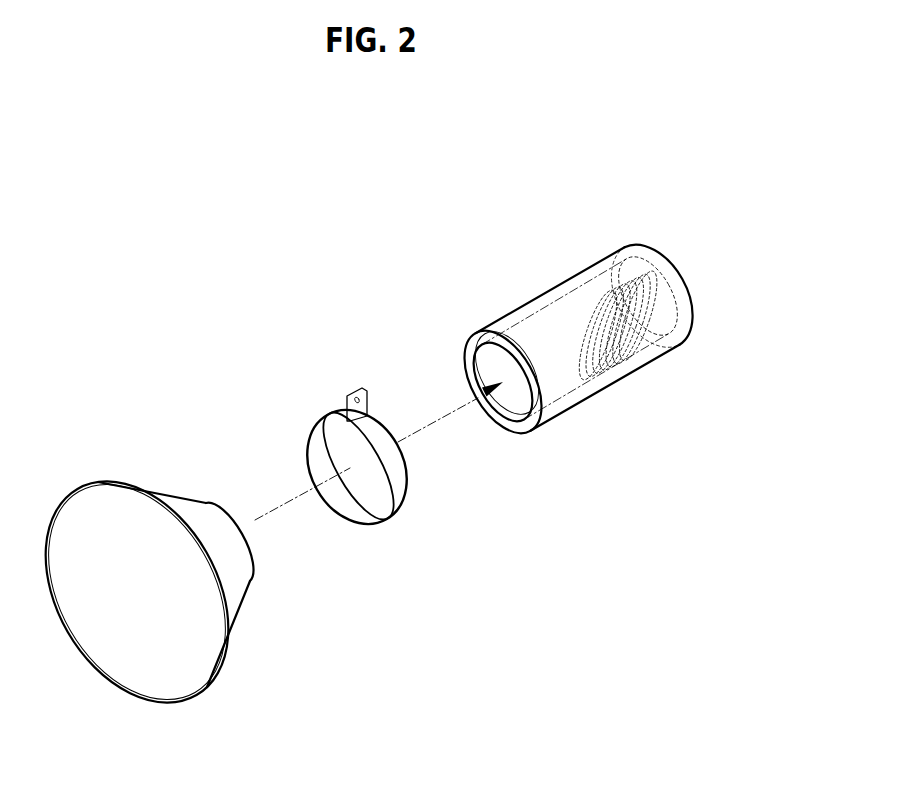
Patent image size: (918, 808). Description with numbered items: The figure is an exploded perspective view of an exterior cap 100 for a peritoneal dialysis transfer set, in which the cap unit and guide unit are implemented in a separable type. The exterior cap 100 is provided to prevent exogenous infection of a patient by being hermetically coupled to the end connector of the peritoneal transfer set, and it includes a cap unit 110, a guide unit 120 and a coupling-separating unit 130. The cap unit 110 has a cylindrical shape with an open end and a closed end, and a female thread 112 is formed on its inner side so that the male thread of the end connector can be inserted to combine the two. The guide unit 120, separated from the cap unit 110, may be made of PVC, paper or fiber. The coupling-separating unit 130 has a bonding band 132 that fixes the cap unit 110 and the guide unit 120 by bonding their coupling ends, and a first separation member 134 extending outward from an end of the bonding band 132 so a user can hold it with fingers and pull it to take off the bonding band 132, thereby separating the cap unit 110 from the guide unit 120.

The exterior cap 100 is at (466, 164).
The cap unit 110 is at (594, 245).
The female thread 112 is at (640, 344).
The guide unit 120 is at (119, 462).
The coupling-separating unit 130 is at (344, 376).
The bonding band 132 is at (401, 460).
The first separation member 134 is at (368, 398).